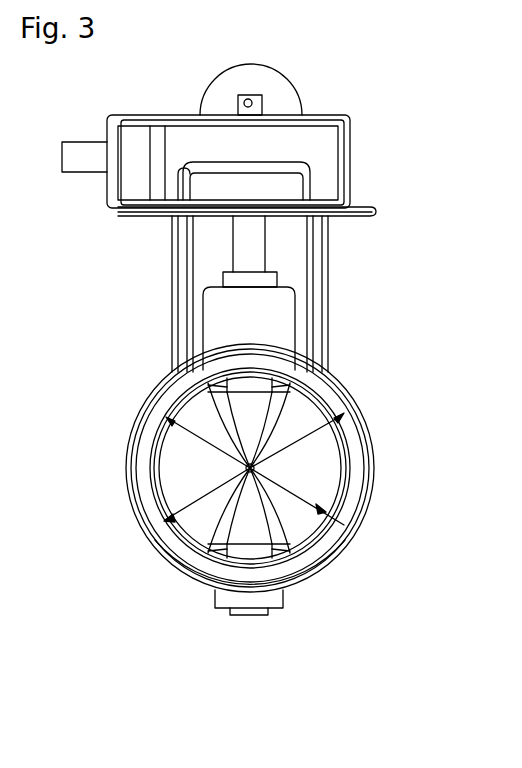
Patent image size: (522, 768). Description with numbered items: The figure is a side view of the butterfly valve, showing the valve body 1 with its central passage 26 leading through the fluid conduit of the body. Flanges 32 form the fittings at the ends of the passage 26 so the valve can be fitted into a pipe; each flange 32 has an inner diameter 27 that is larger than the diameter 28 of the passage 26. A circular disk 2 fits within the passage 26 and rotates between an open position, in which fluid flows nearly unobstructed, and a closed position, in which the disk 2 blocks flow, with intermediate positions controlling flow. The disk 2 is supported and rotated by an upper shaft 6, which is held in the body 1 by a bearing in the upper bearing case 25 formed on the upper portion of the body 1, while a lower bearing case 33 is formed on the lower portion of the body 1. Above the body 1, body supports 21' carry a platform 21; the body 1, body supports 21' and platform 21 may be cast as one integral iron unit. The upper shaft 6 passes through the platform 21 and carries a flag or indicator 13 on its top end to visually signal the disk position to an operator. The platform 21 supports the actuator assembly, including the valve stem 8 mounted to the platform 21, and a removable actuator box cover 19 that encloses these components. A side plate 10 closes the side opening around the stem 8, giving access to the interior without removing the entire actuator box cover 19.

The body 1 is at (138, 415).
The disk 2 is at (177, 465).
The upper shaft 6 is at (245, 100).
The valve stem 8 is at (77, 155).
The side plate 10 is at (108, 185).
The indicator 13 is at (282, 95).
The actuator box cover 19 is at (340, 115).
The platform 21 is at (283, 229).
The body supports 21' is at (257, 294).
The upper bearing case 25 is at (225, 317).
The central passage 26 is at (302, 530).
The inner diameter 27 is at (303, 438).
The diameter 28 is at (300, 495).
The flanges 32 is at (185, 578).
The lower bearing case 33 is at (278, 602).